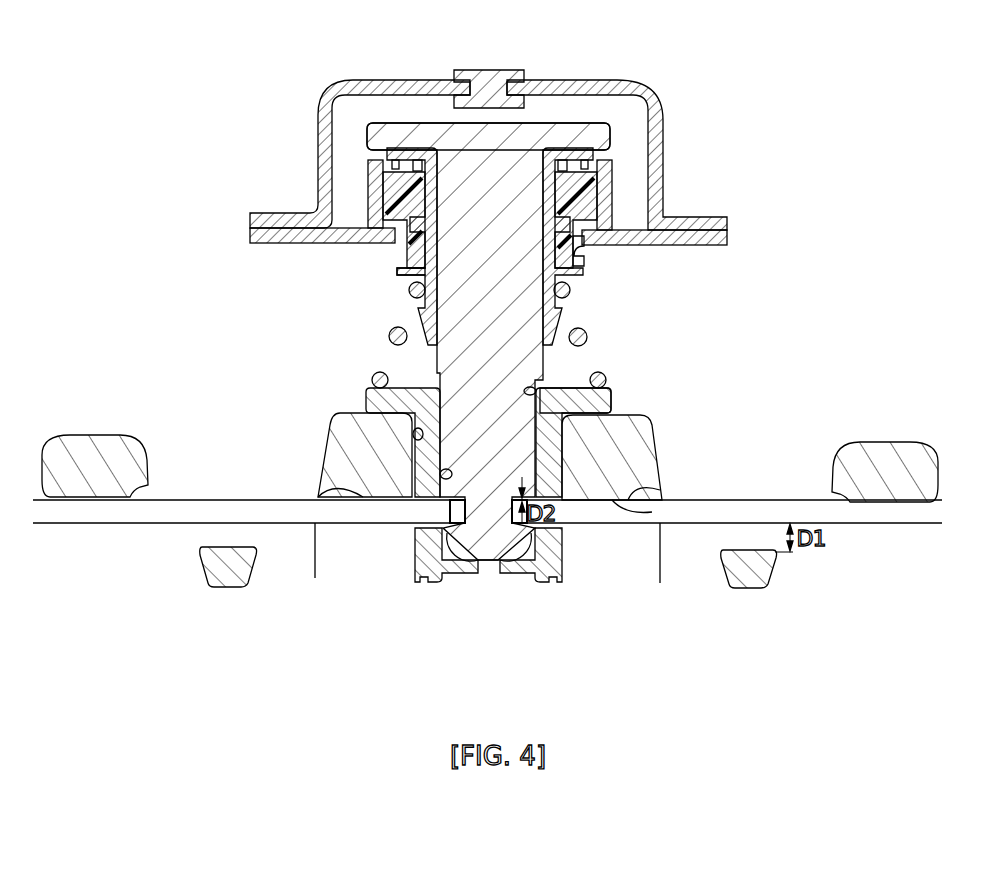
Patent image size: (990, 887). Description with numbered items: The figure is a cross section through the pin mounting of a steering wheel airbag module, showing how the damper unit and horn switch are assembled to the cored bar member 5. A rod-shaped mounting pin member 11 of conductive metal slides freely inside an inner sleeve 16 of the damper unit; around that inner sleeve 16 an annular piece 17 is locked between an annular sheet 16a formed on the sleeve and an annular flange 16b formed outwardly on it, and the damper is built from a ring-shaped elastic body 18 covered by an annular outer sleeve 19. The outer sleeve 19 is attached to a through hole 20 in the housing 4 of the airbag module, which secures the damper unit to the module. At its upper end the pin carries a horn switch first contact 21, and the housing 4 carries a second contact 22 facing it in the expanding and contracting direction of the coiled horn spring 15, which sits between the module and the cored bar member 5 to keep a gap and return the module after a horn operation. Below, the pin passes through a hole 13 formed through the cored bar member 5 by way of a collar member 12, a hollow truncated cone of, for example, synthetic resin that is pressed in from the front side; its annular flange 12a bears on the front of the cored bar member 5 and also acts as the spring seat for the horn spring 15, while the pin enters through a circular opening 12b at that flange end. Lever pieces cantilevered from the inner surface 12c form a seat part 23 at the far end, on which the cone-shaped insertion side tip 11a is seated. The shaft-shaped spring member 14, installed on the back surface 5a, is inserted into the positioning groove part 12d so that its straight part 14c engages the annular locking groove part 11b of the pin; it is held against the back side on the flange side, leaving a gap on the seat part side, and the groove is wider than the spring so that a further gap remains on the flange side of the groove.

The housing 4 is at (710, 246).
The cored bar member 5 is at (628, 443).
The back surface 5a is at (102, 500).
The mounting pin member 11 is at (430, 355).
The insertion side tip 11a is at (523, 532).
The locking groove part 11b is at (453, 527).
The collar member 12 is at (343, 401).
The annular flange 12a is at (612, 402).
The circular opening 12b is at (532, 392).
The inner surface 12c is at (442, 475).
The positioning groove part 12d is at (552, 528).
The hole 13 is at (413, 430).
The spring member 14 is at (787, 495).
The straight part 14c is at (627, 500).
The horn spring 15 is at (389, 337).
The inner sleeve 16 is at (578, 305).
The annular sheet 16a is at (397, 277).
The annular flange 16b is at (419, 152).
The annular piece 17 is at (393, 155).
The elastic body 18 is at (403, 193).
The outer sleeve 19 is at (367, 170).
The through hole 20 is at (582, 258).
The horn switch first contact 21 is at (572, 135).
The second contact 22 is at (489, 80).
The seat part 23 is at (483, 592).